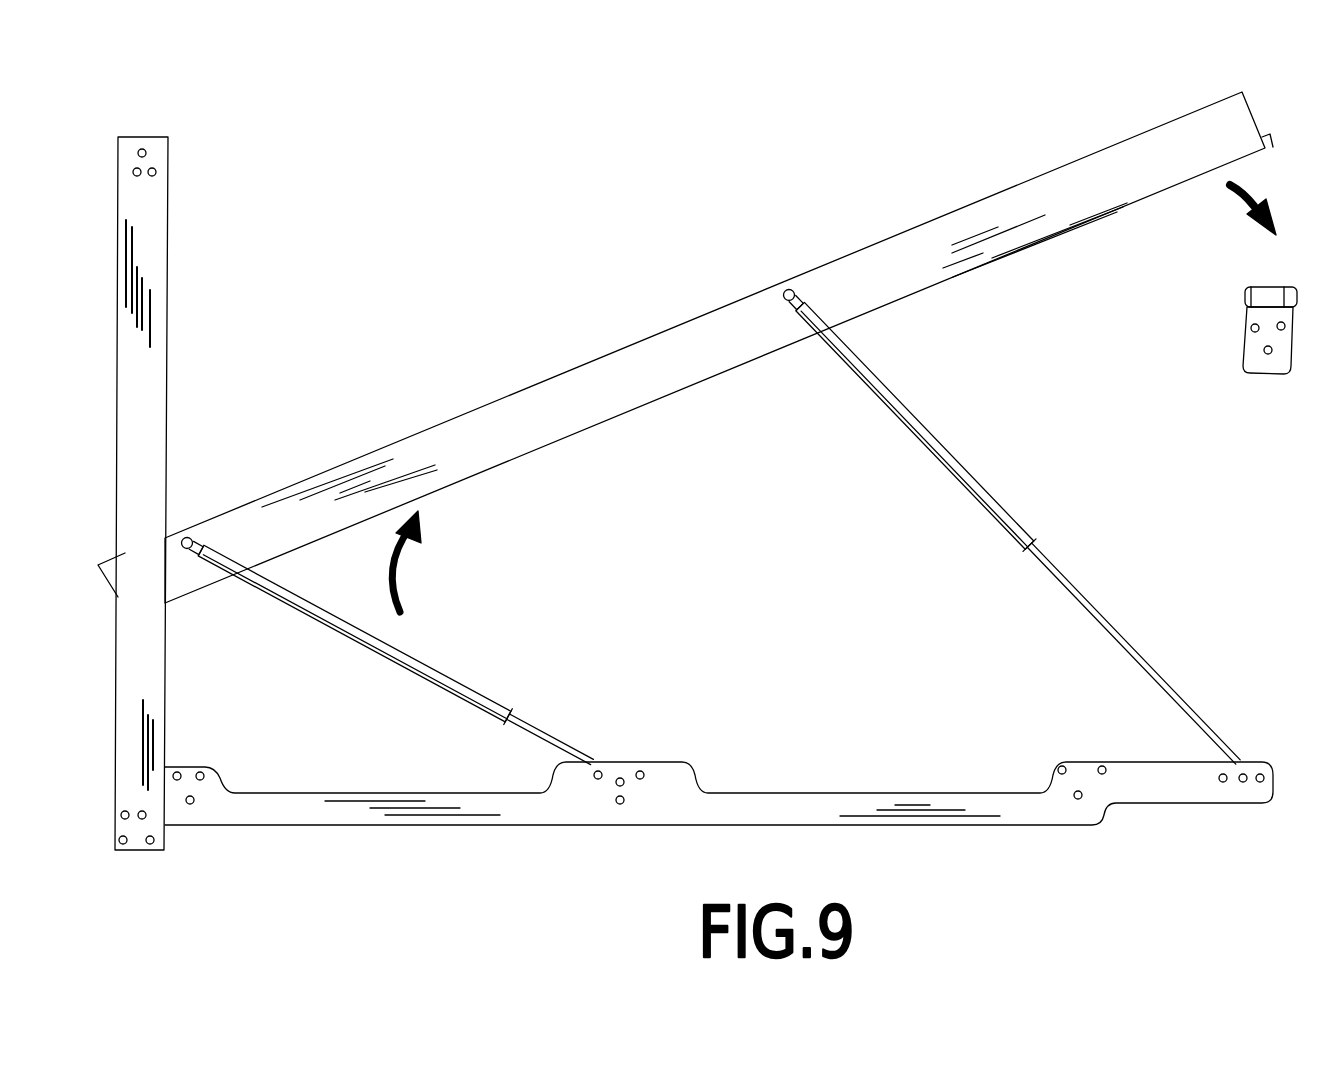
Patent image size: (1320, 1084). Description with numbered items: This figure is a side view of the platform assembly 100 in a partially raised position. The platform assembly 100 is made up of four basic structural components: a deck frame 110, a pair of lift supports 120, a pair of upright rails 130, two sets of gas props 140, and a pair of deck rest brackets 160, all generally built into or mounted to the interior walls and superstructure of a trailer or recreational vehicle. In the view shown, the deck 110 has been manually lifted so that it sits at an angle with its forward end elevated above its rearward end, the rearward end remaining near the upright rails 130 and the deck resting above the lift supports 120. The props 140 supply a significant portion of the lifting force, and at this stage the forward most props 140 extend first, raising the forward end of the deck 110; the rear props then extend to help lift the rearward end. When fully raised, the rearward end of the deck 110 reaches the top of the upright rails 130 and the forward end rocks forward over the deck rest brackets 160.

The platform assembly 100 is at (900, 129).
The deck frame 110 is at (667, 301).
The lift supports 120 is at (808, 765).
The upright rails 130 is at (196, 349).
The gas props 140 is at (465, 653).
The deck rest brackets 160 is at (1214, 317).